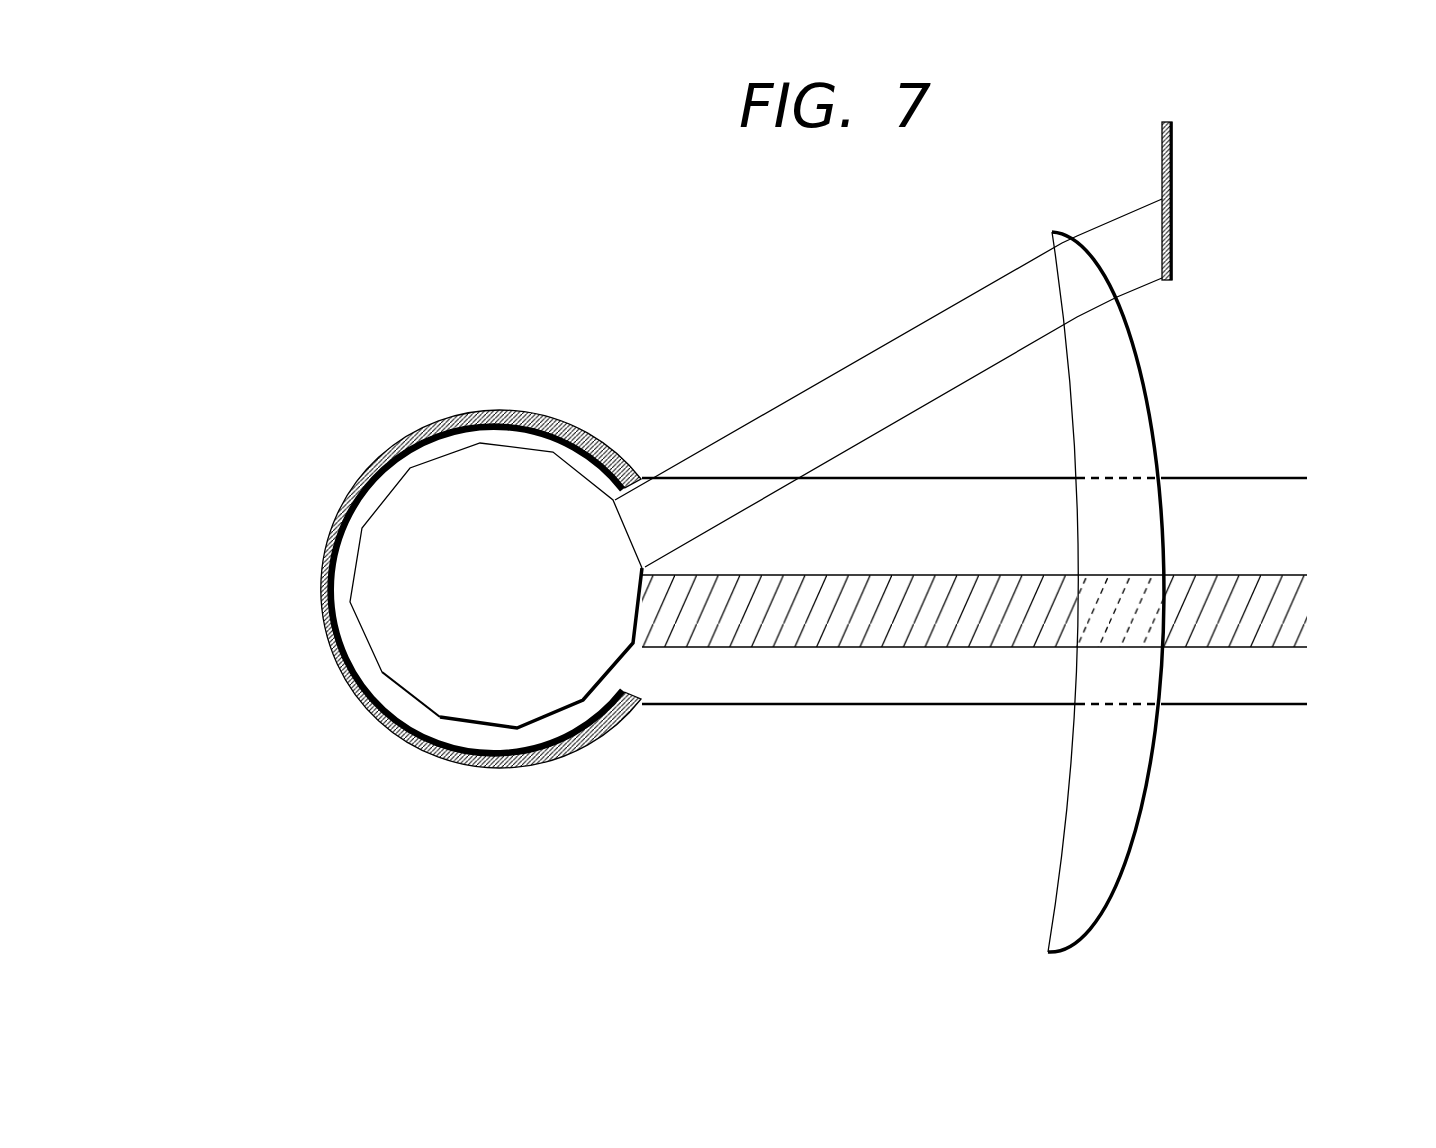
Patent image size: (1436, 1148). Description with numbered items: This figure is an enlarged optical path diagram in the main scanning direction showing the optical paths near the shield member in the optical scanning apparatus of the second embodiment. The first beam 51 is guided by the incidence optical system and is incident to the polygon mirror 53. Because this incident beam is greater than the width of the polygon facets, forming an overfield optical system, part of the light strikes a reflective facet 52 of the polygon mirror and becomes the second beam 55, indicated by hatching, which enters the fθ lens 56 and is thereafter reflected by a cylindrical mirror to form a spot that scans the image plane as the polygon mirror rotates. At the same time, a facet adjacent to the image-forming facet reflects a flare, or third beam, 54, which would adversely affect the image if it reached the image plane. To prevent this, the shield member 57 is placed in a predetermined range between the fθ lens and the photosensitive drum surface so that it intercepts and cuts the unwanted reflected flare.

The first beam 51 is at (1245, 492).
The reflective facet of the polygon mirror 52 is at (638, 612).
The polygon mirror 53 is at (521, 466).
The flare (third beam) 54 is at (847, 367).
The second beam of reflected light 55 is at (1298, 615).
The fθ lens 56 is at (1137, 387).
The shield member 57 is at (1175, 164).